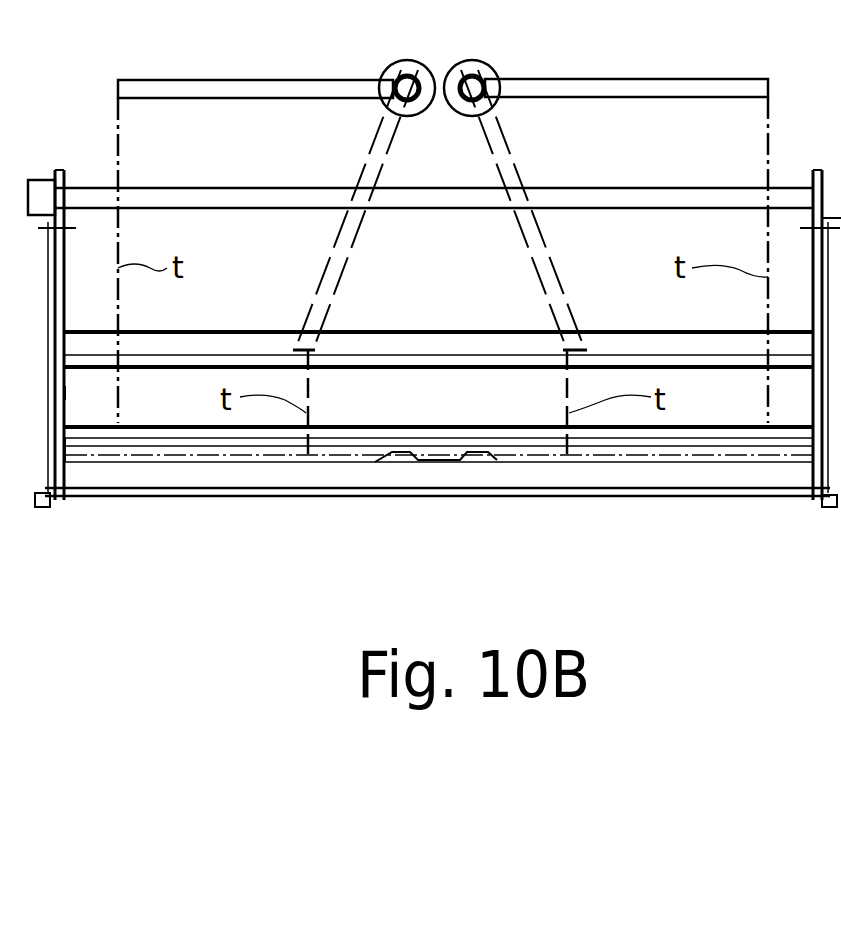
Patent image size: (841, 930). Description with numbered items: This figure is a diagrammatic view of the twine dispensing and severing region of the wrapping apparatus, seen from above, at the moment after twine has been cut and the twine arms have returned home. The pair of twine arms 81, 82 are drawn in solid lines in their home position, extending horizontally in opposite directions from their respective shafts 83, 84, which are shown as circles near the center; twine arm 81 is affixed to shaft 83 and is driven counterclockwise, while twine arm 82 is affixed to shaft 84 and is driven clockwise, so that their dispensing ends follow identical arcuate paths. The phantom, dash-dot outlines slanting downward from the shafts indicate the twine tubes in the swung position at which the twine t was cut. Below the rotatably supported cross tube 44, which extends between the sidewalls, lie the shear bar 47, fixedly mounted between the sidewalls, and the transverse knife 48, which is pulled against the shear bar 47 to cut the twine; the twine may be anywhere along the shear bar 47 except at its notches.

The cross tube 44 is at (292, 200).
The shear bar 47 is at (353, 462).
The knife 48 is at (213, 472).
The twine arm 81 is at (195, 90).
The twine arm 82 is at (600, 85).
The shaft 83 is at (405, 85).
The shaft 84 is at (478, 85).